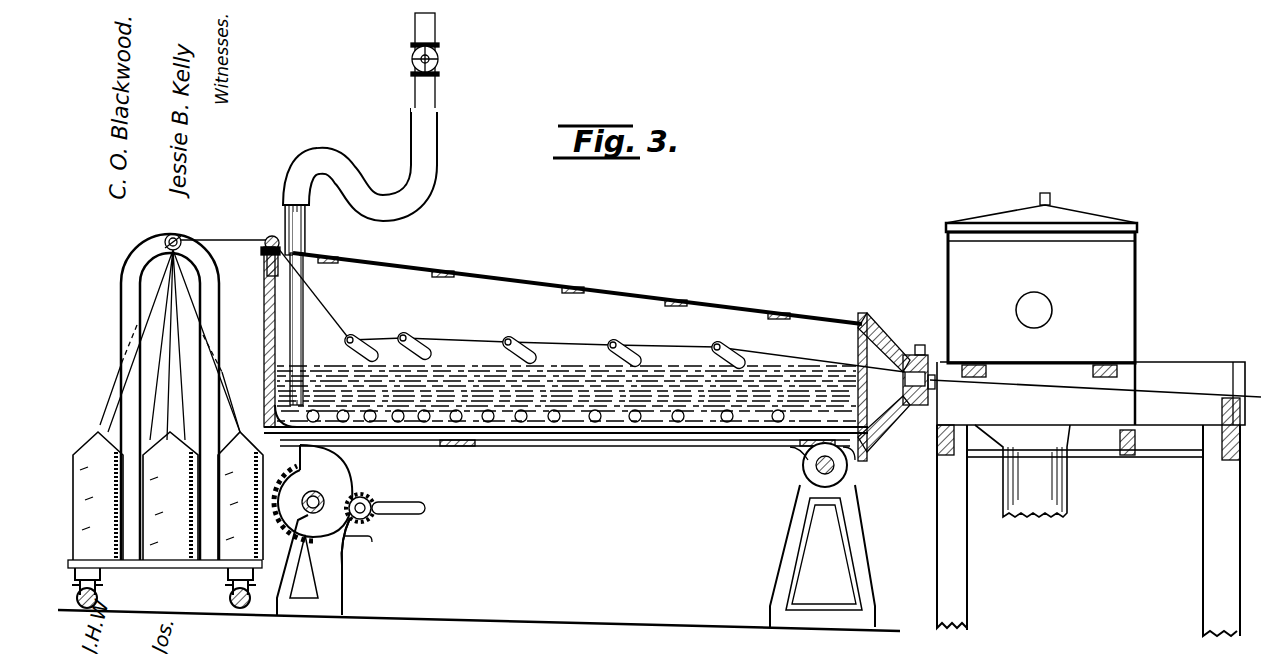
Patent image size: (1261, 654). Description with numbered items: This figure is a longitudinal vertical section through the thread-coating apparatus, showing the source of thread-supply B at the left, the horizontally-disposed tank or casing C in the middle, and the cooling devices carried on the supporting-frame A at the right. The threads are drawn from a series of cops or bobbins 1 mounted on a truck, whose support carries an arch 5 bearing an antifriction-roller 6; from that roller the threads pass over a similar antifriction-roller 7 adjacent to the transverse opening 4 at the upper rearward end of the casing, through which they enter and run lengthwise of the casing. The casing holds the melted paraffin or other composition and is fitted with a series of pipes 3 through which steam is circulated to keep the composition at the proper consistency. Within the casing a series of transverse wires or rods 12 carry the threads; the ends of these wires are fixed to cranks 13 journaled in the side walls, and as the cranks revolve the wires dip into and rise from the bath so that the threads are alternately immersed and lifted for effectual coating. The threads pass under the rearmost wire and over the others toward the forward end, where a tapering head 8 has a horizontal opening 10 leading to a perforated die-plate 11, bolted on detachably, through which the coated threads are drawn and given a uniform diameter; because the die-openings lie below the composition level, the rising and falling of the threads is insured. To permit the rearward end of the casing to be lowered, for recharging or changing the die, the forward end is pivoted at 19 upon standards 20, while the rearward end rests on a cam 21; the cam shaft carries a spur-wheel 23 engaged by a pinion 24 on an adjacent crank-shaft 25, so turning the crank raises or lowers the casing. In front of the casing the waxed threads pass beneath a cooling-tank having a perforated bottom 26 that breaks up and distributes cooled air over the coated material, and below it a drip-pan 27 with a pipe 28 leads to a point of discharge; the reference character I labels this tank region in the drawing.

The cops or bobbins 1 is at (115, 440).
The pipes 3 is at (542, 428).
The transverse opening 4 is at (306, 253).
The arch 5 is at (222, 380).
The antifriction-roller 6 is at (180, 237).
The antifriction-roller 7 is at (270, 237).
The tapering head 8 is at (880, 345).
The horizontal opening 10 is at (908, 408).
The perforated die-plate 11 is at (920, 345).
The transverse wires or rods 12 is at (410, 337).
The cranks 13 is at (515, 340).
The pivot 19 is at (815, 470).
The standards 20 is at (800, 522).
The cam 21 is at (348, 470).
The spur-wheel 23 is at (335, 540).
The pinion 24 is at (368, 497).
The crank-shaft 25 is at (400, 518).
The perforated bottom 26 is at (1043, 323).
The drip-pan 27 is at (1095, 393).
The pipe 28 is at (1067, 490).
The supporting-frame A is at (965, 558).
The source of thread-supply B is at (165, 421).
The tank or casing C is at (564, 353).
The box I is at (1041, 285).